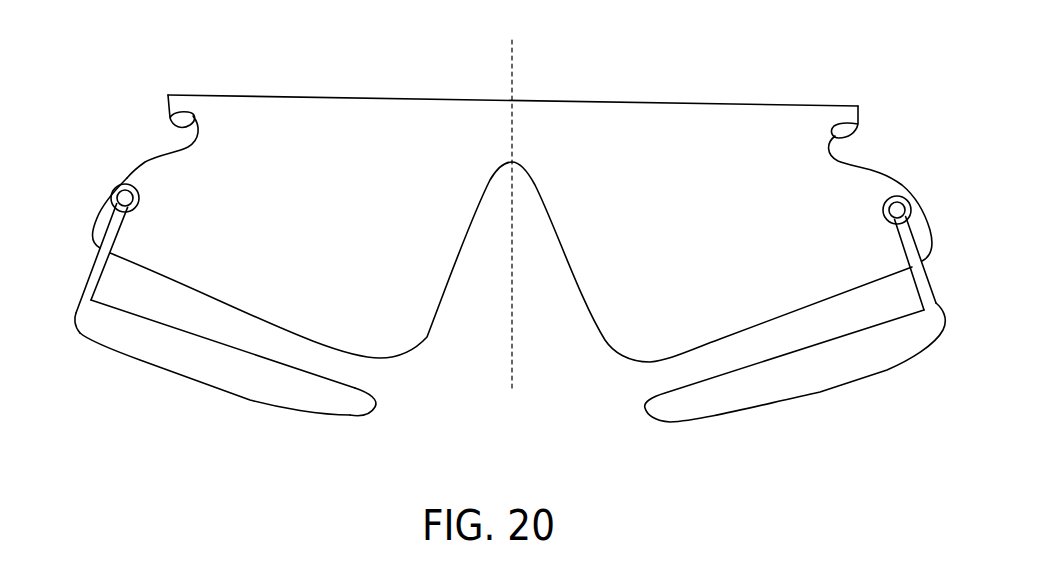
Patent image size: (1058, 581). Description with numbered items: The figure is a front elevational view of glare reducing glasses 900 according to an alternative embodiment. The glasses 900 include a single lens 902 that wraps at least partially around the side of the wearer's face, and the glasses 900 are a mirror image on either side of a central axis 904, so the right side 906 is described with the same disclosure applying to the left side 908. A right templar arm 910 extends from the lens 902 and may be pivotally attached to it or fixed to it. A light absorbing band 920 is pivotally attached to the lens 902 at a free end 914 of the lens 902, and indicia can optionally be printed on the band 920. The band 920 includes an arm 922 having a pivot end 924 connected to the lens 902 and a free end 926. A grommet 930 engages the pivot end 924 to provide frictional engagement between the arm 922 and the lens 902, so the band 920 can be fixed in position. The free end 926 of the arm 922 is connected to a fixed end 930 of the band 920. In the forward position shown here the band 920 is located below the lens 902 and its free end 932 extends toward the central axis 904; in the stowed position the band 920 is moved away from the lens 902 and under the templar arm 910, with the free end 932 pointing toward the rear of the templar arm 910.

The glasses 900 is at (764, 51).
The lens 902 is at (229, 95).
The central axis 904 is at (508, 357).
The right side 906 is at (132, 175).
The left side 908 is at (872, 185).
The right templar arm 910 is at (168, 119).
The free end of lens 914 is at (98, 227).
The light absorbing band 920 is at (154, 365).
The arm 922 is at (118, 233).
The pivot end 924 is at (132, 190).
The free end of arm 926 is at (90, 285).
The grommet 930 is at (133, 204).
The free end of band 932 is at (350, 407).